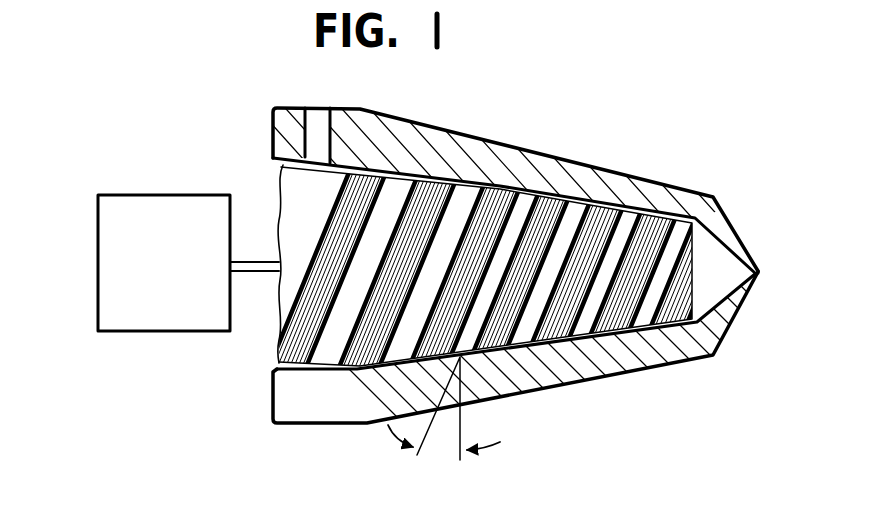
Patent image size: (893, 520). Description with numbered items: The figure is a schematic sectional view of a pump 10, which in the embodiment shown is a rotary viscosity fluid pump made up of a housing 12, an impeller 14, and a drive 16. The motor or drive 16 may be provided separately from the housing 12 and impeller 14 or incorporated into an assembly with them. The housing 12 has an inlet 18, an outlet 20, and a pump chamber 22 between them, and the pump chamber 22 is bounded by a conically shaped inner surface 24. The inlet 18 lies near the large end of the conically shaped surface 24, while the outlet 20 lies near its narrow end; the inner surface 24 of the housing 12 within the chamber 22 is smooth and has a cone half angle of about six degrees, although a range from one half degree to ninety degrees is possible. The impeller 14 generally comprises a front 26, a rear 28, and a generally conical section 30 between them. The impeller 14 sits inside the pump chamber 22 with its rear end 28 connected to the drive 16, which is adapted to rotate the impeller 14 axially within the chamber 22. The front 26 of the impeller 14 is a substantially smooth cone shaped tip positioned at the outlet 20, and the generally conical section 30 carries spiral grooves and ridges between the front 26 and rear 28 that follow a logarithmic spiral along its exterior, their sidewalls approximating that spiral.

The pump 10 is at (127, 112).
The housing 12 is at (547, 160).
The impeller 14 is at (610, 195).
The drive 16 is at (98, 195).
The inlet 18 is at (268, 158).
The outlet 20 is at (763, 273).
The pump chamber 22 is at (425, 187).
The conically shaped inner surface 24 is at (493, 162).
The front 26 is at (708, 280).
The rear 28 is at (275, 340).
The generally conical section 30 is at (573, 378).